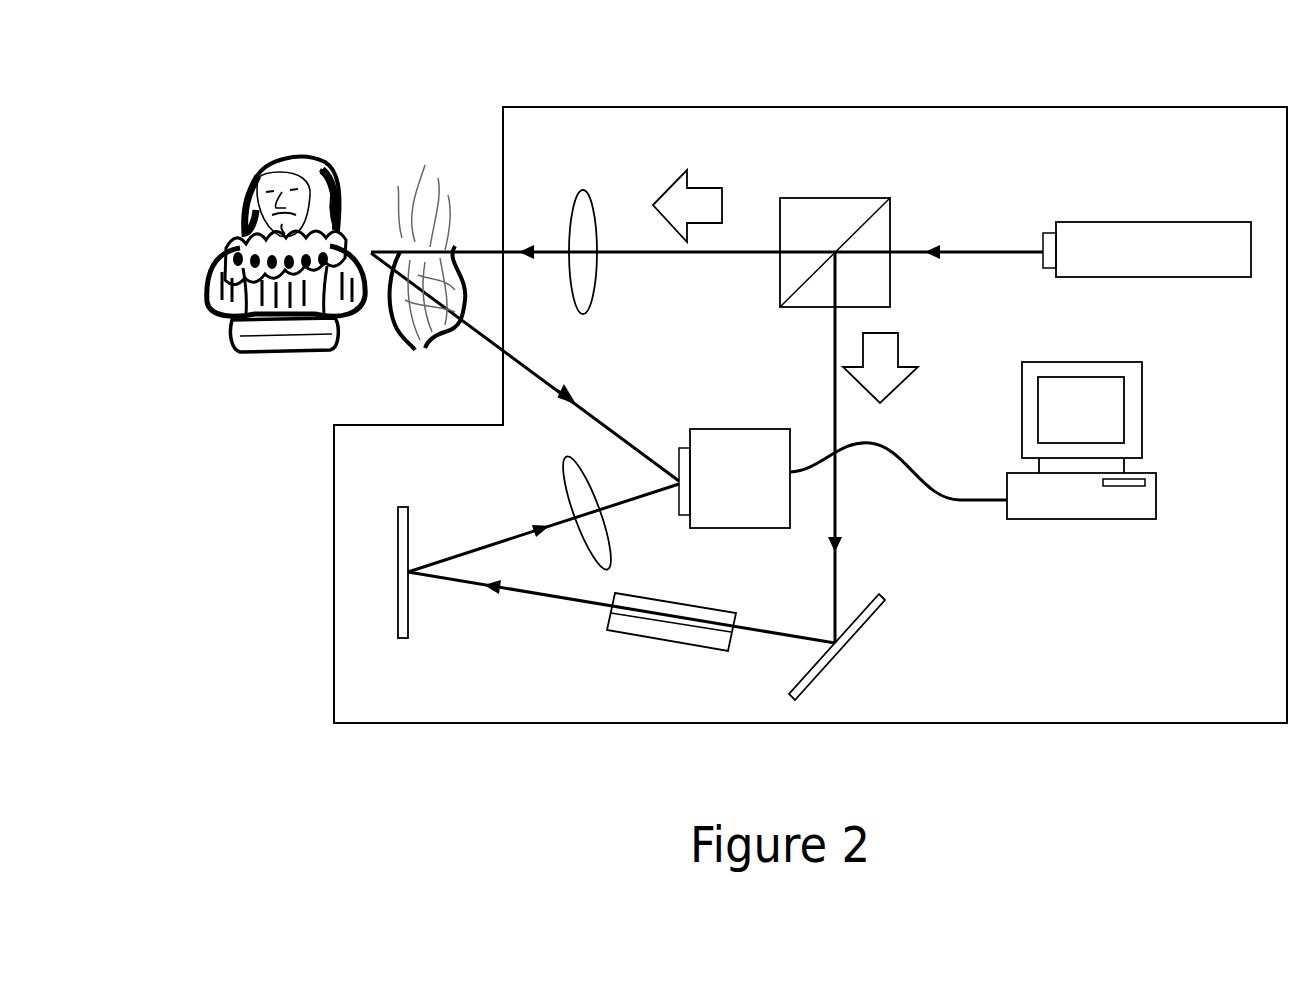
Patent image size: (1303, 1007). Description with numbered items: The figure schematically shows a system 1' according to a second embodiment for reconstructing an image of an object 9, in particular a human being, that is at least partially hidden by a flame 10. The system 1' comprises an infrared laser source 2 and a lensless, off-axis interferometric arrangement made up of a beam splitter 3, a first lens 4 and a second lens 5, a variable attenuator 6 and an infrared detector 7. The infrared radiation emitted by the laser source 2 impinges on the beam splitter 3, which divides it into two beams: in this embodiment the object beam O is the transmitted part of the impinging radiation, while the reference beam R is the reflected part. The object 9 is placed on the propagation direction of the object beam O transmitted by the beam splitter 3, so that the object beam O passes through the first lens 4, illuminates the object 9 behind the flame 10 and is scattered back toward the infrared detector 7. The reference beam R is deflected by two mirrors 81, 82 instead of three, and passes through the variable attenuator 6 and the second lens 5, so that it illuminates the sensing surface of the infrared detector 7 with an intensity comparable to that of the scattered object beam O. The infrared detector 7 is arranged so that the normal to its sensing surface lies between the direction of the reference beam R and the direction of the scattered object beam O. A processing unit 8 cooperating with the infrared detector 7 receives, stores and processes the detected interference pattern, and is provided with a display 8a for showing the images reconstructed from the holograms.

The system 1' is at (810, 380).
The laser source 2 is at (1153, 222).
The beam splitter 3 is at (836, 197).
The first lens 4 is at (584, 190).
The second lens 5 is at (563, 466).
The variable attenuator 6 is at (668, 640).
The infrared detector 7 is at (740, 428).
The processing unit 8 is at (1157, 497).
The display 8a is at (1143, 410).
The mirror 81 is at (880, 598).
The mirror 82 is at (400, 506).
The object 9 is at (207, 255).
The flame 10 is at (405, 342).
The object beam O is at (697, 186).
The reference beam R is at (900, 348).